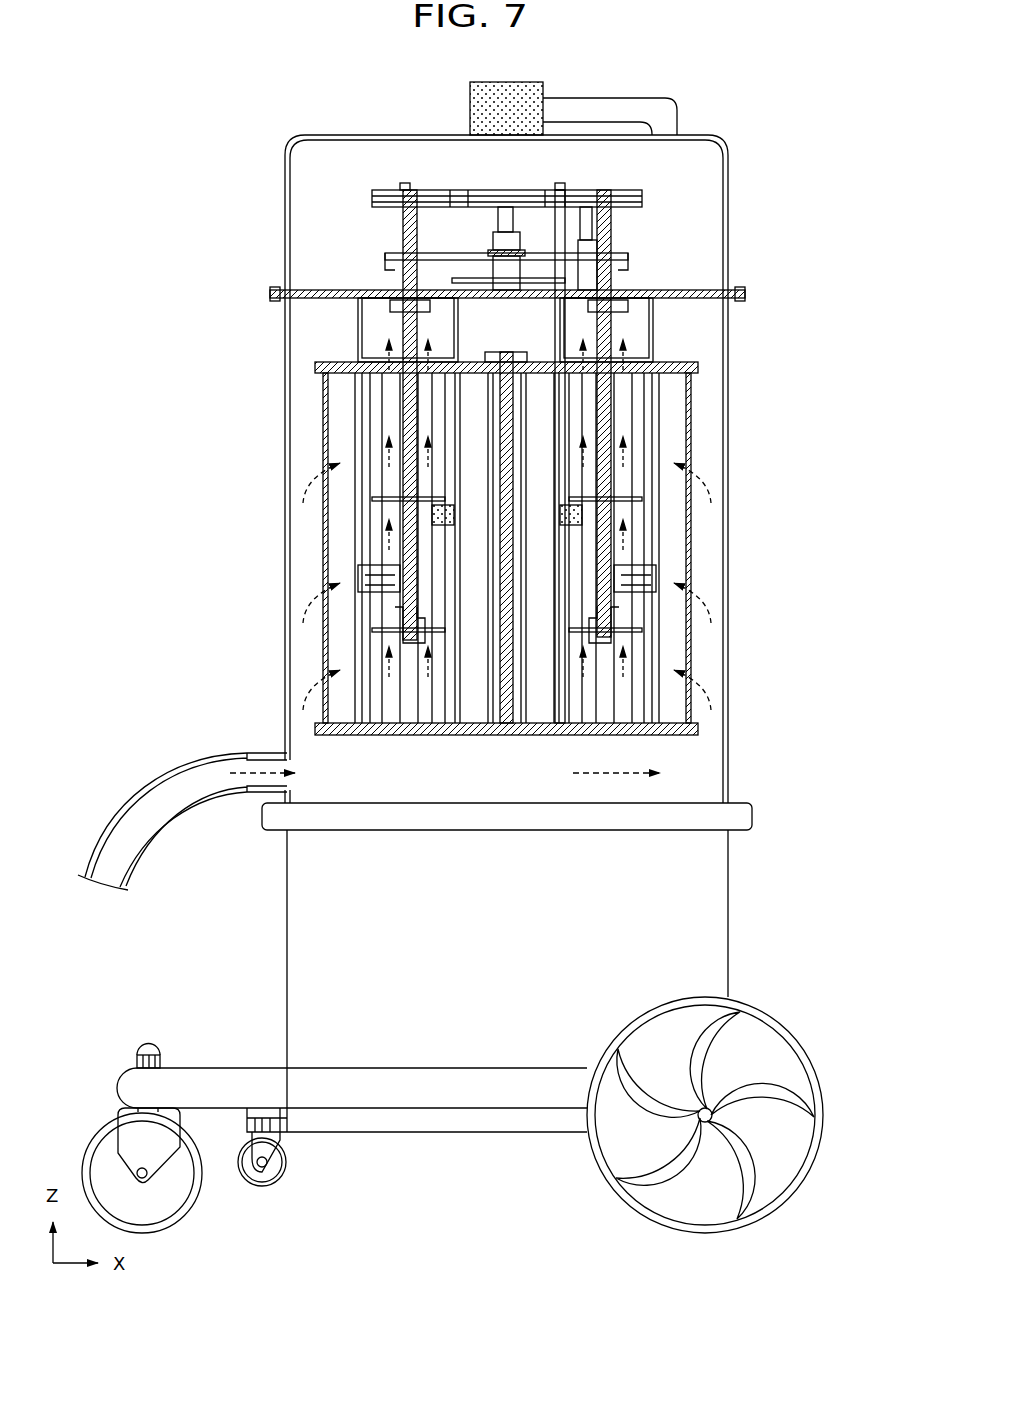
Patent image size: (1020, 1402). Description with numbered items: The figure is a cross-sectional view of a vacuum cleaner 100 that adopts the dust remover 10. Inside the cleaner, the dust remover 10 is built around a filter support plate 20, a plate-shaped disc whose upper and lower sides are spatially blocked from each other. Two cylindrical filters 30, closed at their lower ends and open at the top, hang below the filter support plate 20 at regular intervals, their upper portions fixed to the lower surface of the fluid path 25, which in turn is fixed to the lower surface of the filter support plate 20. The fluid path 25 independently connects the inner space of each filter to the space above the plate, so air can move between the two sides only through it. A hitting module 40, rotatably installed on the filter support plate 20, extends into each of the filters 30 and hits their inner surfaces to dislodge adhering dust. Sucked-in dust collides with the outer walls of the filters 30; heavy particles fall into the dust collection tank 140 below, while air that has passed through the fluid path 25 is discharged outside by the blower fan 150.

The vacuum cleaner 100 is at (755, 112).
The dust remover 10 is at (670, 257).
The filter support plate 20 is at (702, 290).
The fluid path 25 is at (358, 332).
The filters 30 is at (357, 643).
The hitting module 40 is at (380, 560).
The dust collection tank 140 is at (728, 925).
The blower fan 150 is at (470, 106).